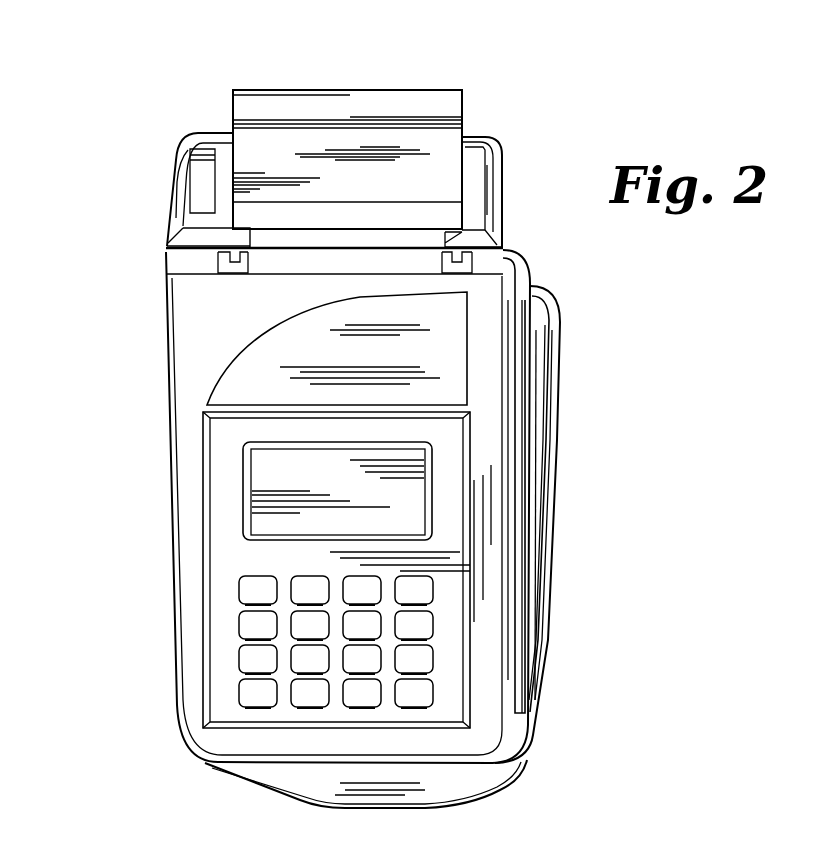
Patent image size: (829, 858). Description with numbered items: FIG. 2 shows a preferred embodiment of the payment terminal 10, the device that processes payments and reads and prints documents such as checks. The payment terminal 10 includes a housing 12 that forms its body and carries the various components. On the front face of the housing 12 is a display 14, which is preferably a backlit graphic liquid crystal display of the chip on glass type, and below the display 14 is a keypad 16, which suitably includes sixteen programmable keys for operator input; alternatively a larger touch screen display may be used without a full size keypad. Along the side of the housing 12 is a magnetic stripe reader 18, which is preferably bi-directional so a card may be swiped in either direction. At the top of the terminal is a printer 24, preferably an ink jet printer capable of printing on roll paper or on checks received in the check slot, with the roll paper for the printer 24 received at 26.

The payment terminal 10 is at (142, 413).
The housing 12 is at (166, 350).
The display 14 is at (262, 522).
The keypad 16 is at (236, 653).
The magnetic stripe reader 18 is at (553, 295).
The printer 24 is at (483, 133).
The roll paper receiving location 26 is at (362, 90).